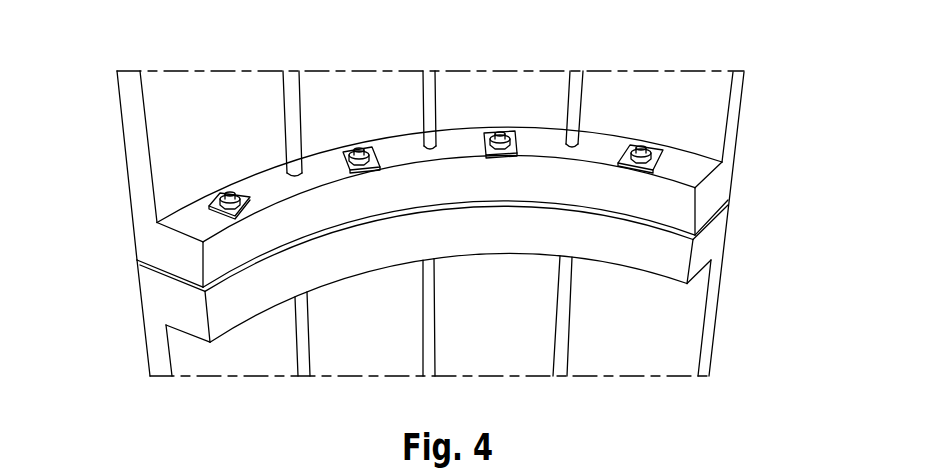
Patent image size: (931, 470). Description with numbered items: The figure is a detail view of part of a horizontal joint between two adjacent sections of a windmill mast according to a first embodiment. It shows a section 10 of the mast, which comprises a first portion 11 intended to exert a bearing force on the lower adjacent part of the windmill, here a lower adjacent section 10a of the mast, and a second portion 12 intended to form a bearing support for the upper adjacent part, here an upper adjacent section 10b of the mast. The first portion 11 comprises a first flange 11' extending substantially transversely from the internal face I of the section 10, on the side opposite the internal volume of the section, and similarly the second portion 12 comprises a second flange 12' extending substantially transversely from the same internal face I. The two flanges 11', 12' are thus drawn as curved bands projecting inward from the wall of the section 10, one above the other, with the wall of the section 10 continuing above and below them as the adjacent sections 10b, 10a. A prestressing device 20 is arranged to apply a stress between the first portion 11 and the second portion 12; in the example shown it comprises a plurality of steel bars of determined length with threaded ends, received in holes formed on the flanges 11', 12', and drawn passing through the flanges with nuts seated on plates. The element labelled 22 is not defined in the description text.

The section 10 is at (713, 111).
The lower adjacent section 10a is at (182, 345).
The upper adjacent section 10b is at (173, 136).
The first portion 11 is at (401, 207).
The first flange 11' is at (750, 198).
The second portion 12 is at (378, 274).
The second flange 12' is at (744, 244).
The prestressing device 20 is at (276, 97).
The rod 22 is at (430, 102).
The internal face I is at (654, 103).